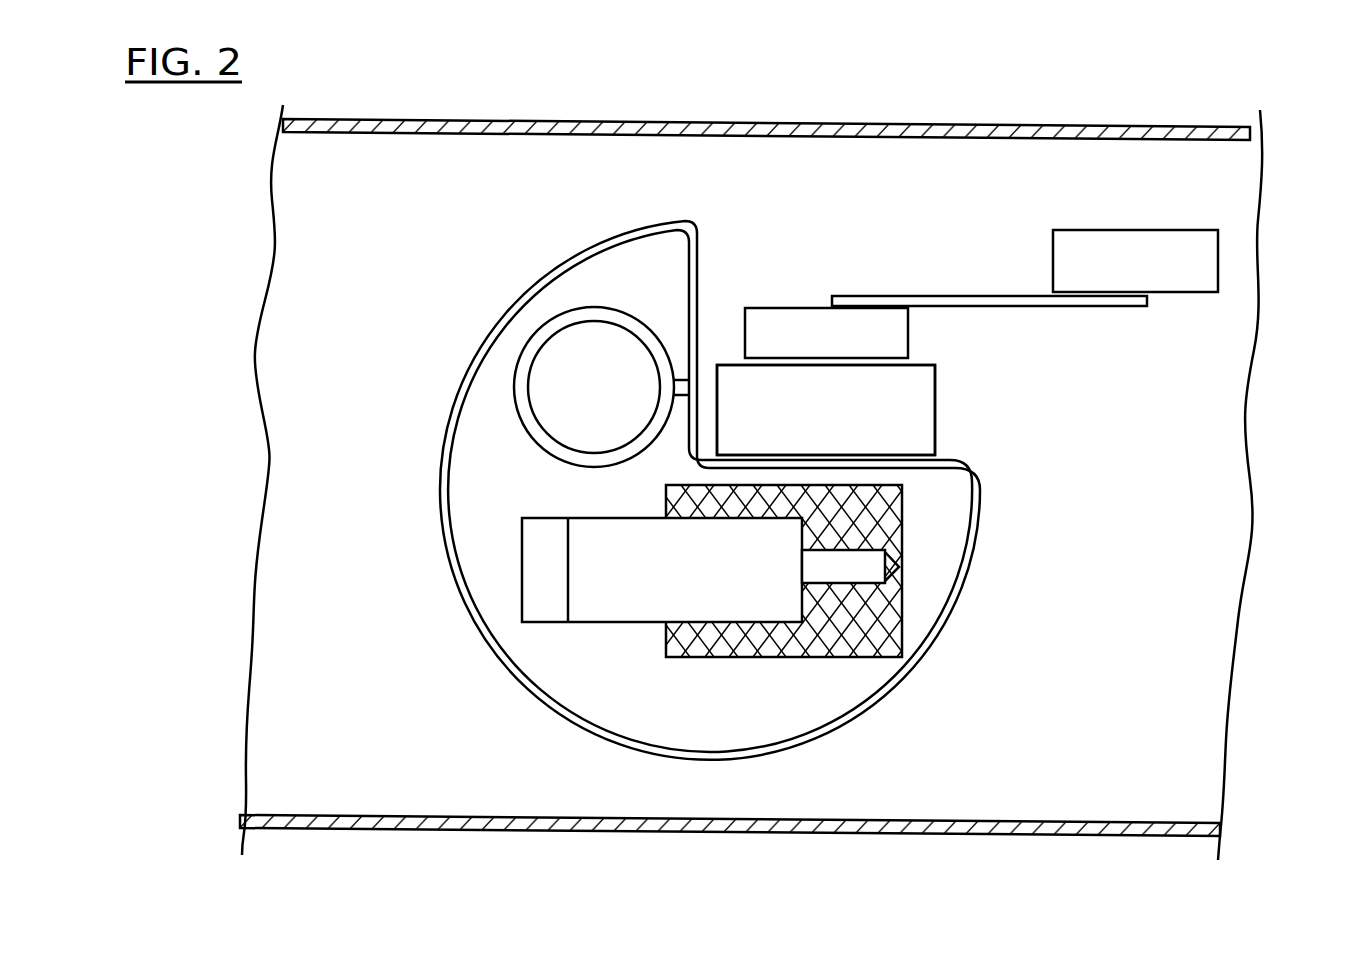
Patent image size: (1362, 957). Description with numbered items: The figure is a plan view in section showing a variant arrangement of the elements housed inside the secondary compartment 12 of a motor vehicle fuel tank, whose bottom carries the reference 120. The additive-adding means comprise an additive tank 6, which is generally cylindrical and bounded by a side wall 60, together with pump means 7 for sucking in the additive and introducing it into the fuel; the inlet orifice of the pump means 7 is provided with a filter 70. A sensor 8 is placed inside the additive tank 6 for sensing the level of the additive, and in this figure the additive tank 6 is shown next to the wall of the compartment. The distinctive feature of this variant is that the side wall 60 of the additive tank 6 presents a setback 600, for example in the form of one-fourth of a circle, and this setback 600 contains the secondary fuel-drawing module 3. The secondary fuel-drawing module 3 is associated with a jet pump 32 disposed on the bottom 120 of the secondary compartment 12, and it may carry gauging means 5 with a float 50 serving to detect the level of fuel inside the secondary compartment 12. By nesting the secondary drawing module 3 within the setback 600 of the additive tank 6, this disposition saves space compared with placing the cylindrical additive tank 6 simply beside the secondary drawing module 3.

The secondary compartment 12 is at (898, 193).
The additive tank 6 is at (587, 678).
The side wall 60 is at (493, 653).
The sensor 8 is at (595, 380).
The setback 600 is at (708, 353).
The gauging means 5 is at (815, 332).
The secondary fuel-drawing module 3 is at (947, 365).
The jet pump 32 is at (912, 417).
The float 50 is at (1190, 260).
The filter 70 is at (847, 630).
The pump means 7 is at (702, 593).
The bottom of the secondary compartment 120 is at (1167, 690).